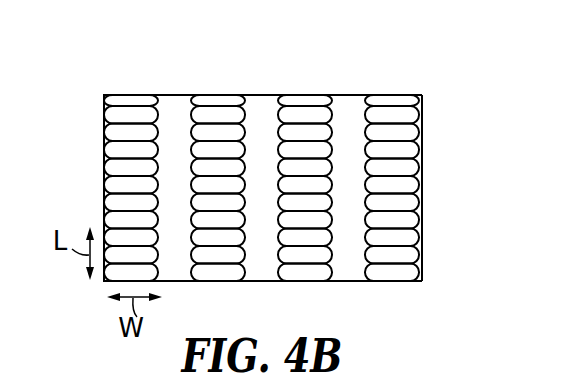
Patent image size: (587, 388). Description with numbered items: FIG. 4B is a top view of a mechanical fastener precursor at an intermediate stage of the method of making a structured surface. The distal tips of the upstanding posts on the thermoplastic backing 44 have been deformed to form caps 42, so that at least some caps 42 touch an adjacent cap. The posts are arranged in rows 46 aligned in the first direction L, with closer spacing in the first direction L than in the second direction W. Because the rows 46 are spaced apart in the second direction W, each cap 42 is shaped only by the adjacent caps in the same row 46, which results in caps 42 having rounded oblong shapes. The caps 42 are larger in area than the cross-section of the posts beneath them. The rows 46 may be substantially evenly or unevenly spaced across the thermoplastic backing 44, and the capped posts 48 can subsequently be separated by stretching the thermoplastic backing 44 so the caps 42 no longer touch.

The caps 42 is at (120, 130).
The thermoplastic backing 44 is at (424, 227).
The rows 46 is at (400, 93).
The capped posts 48 is at (430, 254).